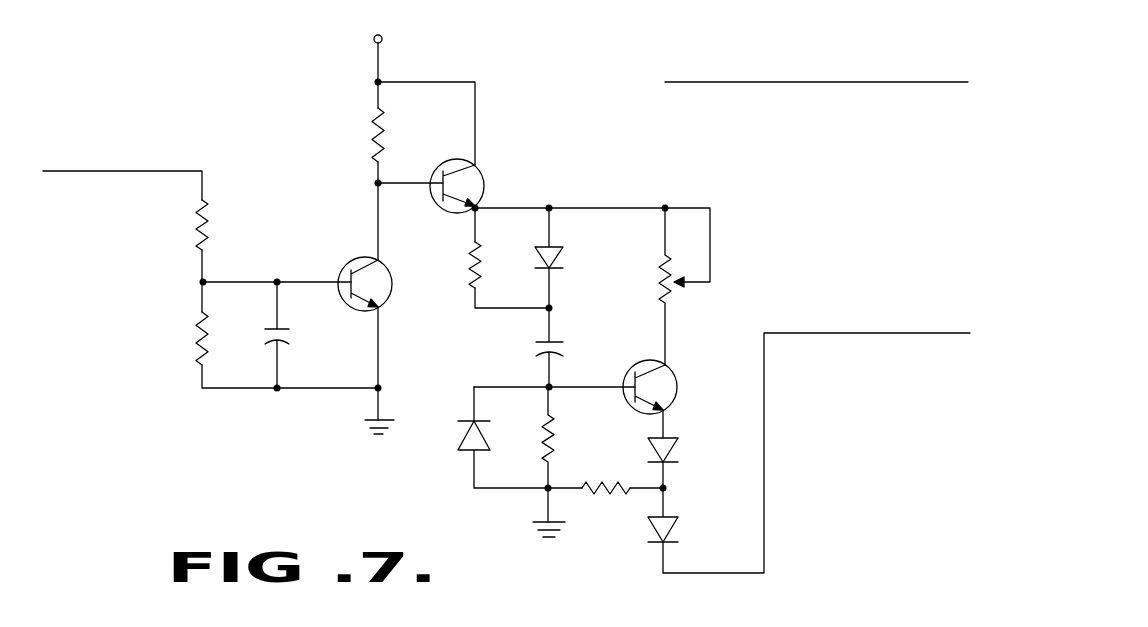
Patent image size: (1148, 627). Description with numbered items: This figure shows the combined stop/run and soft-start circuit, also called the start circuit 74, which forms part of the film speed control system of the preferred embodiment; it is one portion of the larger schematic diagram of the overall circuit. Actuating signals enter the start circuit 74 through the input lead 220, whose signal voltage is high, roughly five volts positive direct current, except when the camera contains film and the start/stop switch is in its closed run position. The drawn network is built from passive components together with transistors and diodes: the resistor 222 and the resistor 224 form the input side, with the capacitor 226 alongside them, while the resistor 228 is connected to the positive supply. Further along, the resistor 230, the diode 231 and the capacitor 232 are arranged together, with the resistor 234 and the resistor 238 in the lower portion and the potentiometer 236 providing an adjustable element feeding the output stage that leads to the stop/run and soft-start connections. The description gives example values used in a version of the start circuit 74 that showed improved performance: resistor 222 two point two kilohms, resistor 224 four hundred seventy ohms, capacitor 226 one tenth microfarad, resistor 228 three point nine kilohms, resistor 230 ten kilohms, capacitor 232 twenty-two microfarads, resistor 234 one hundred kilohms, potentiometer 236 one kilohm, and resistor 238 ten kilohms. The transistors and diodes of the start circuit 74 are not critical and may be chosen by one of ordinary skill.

The start circuit 74 is at (562, 116).
The input lead 220 is at (165, 166).
The resistor 222 is at (197, 230).
The resistor 224 is at (196, 347).
The capacitor 226 is at (268, 337).
The resistor 228 is at (370, 128).
The resistor 230 is at (470, 247).
The diode 231 is at (563, 258).
The capacitor 232 is at (536, 350).
The resistor 234 is at (556, 426).
The potentiometer 236 is at (652, 276).
The resistor 238 is at (620, 492).